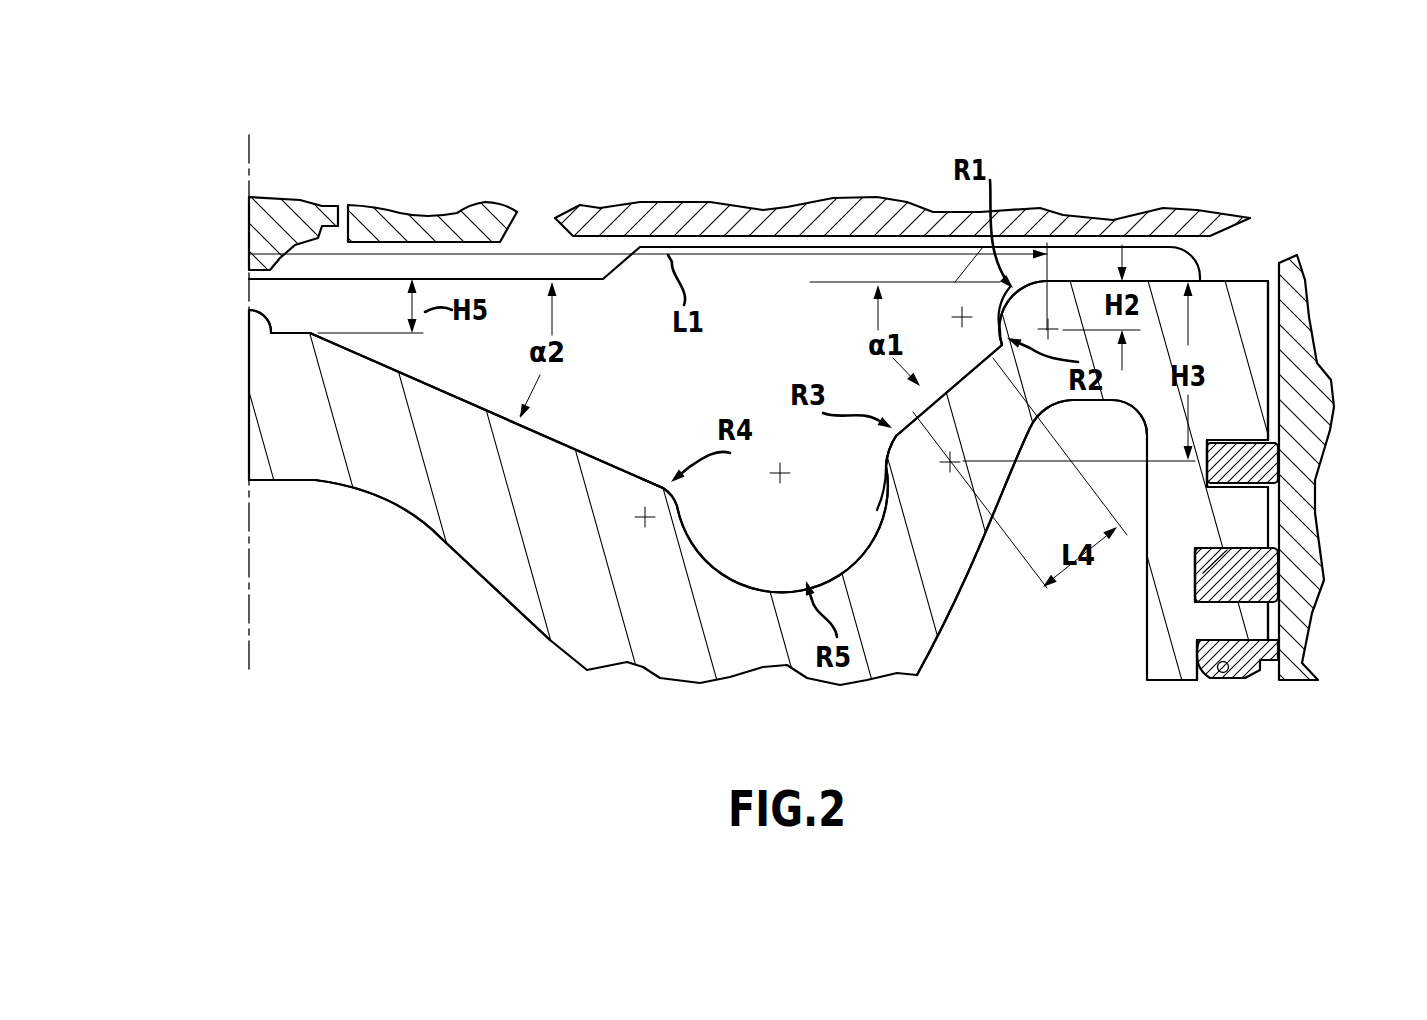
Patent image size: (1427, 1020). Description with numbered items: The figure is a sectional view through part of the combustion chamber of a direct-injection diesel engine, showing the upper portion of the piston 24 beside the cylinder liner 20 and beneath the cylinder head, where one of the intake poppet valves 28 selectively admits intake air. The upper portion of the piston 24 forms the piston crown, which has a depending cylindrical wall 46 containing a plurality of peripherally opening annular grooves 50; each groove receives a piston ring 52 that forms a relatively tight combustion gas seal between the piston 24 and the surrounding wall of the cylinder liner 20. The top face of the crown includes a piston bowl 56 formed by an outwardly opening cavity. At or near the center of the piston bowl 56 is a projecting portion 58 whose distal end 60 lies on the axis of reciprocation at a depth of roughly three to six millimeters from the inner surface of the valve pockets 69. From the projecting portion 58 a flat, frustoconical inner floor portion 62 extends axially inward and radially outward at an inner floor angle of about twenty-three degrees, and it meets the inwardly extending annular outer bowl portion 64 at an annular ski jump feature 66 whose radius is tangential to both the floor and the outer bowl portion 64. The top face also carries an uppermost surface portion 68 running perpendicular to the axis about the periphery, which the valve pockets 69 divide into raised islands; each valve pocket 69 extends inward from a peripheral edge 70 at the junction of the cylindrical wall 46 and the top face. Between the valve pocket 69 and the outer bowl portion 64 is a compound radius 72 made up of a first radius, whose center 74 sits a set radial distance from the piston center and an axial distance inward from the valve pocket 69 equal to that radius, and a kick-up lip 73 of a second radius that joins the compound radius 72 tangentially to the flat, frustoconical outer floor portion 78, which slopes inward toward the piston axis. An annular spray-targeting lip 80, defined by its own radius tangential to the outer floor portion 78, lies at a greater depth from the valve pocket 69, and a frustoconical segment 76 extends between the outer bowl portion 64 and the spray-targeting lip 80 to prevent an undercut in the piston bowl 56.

The cylinder liner 20 is at (1276, 262).
The piston 24 is at (548, 642).
The poppet valves 28 is at (1157, 222).
The cylindrical wall 46 is at (1223, 625).
The annular grooves 50 is at (1207, 472).
The piston rings 52 is at (1263, 462).
The piston bowl 56 is at (752, 302).
The projecting portion 58 is at (407, 492).
The distal end 60 is at (248, 312).
The inner floor portion 62 is at (570, 447).
The outer bowl portion 64 is at (830, 523).
The ski jump feature 66 is at (662, 486).
The uppermost surface portion 68 is at (762, 248).
The valve pockets 69 is at (535, 279).
The peripheral edge 70 is at (1287, 280).
The compound radius 72 is at (988, 308).
The kick-up lip 73 is at (992, 338).
The center of radius R1 74 is at (1050, 330).
The frustoconical segment 76 is at (885, 462).
The outer floor portion 78 is at (962, 368).
The spray-targeting lip 80 is at (891, 401).